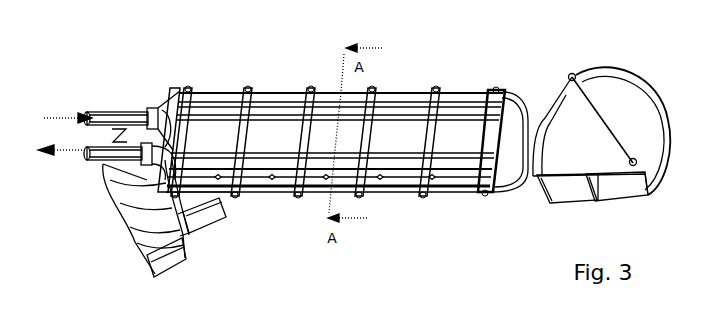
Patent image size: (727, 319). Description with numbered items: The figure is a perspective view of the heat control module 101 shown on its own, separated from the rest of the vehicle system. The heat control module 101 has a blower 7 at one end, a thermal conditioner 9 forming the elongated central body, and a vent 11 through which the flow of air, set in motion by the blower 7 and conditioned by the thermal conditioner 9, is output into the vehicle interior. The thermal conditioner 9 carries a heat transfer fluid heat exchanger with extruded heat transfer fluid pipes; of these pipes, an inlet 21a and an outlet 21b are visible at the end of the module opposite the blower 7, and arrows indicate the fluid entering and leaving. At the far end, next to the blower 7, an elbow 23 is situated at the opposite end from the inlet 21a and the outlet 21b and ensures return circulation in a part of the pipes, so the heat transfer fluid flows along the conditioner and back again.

The heat control module 101 is at (248, 70).
The thermal conditioner 9 is at (390, 193).
The vent 11 is at (235, 190).
The inlet 21a is at (107, 102).
The outlet 21b is at (100, 165).
The elbow 23 is at (520, 97).
The blower 7 is at (650, 182).